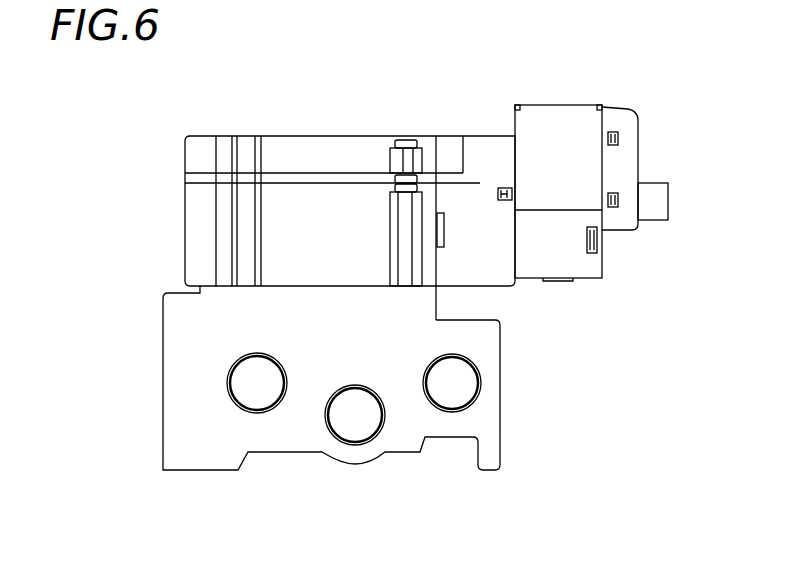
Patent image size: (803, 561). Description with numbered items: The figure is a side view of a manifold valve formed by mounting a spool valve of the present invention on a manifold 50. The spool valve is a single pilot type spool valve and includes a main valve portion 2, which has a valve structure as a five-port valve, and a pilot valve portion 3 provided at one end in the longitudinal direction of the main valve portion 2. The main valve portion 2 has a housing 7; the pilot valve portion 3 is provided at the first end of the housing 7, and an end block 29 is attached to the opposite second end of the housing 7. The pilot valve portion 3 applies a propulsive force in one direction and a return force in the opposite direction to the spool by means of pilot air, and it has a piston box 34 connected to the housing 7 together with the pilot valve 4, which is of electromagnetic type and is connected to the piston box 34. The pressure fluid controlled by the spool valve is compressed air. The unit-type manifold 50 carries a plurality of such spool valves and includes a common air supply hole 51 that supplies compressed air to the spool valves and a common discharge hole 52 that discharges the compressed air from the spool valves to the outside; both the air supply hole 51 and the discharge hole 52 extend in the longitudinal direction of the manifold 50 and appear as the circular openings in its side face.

The main valve portion 2 is at (297, 170).
The pilot valve portion 3 is at (560, 90).
The pilot valve 4 is at (585, 170).
The housing 7 is at (375, 147).
The end block 29 is at (208, 152).
The piston box 34 is at (495, 147).
The manifold 50 is at (187, 332).
The air supply hole 51 is at (353, 417).
The discharge hole 52 is at (257, 388).